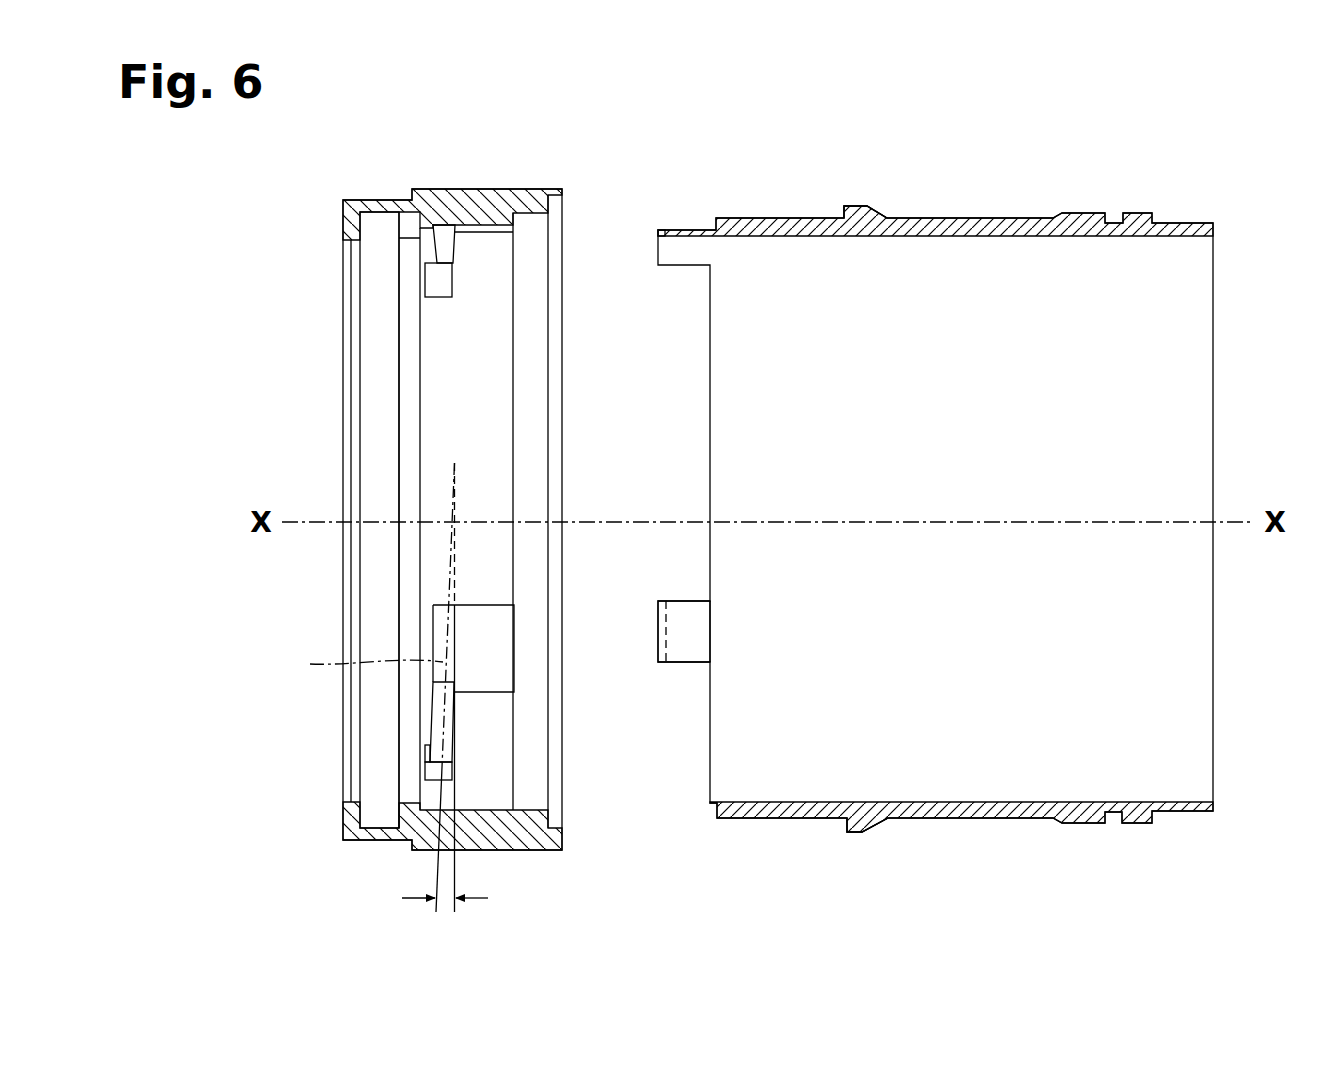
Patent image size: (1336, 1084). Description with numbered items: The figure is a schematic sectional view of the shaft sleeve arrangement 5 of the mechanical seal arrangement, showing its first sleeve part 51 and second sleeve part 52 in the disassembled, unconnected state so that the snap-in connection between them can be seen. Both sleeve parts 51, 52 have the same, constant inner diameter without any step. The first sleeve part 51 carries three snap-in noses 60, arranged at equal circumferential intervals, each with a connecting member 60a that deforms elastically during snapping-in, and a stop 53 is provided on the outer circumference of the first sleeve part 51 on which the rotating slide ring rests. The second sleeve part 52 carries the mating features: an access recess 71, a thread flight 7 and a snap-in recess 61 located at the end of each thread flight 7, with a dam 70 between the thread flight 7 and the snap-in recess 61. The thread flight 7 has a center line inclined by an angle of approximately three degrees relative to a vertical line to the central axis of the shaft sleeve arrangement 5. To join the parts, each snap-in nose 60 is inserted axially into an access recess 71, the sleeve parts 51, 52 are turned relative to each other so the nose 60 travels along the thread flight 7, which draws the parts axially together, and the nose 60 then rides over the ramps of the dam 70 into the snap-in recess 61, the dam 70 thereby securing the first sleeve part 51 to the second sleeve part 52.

The shaft sleeve arrangement 5 is at (227, 199).
The thread flight 7 is at (443, 238).
The first sleeve part 51 is at (988, 228).
The second sleeve part 52 is at (493, 202).
The stop 53 is at (855, 215).
The snap-in nose 60 is at (661, 232).
The connecting member 60a is at (685, 643).
The snap-in recess 61 is at (438, 282).
The dam 70 is at (440, 253).
The access recess 71 is at (495, 652).